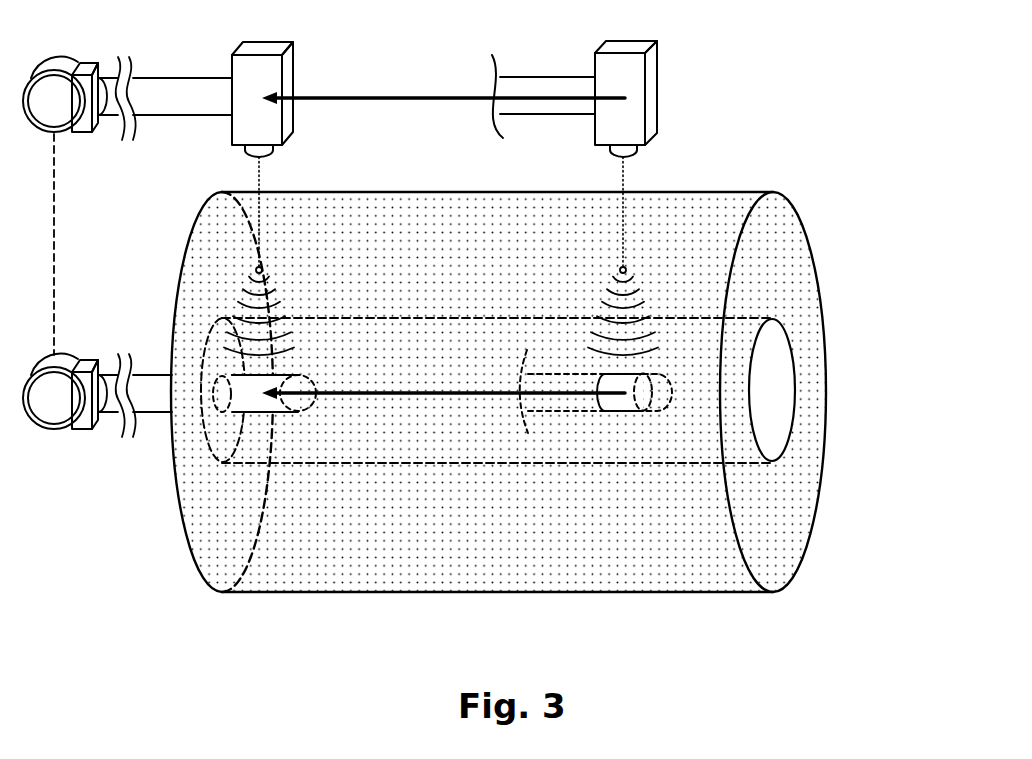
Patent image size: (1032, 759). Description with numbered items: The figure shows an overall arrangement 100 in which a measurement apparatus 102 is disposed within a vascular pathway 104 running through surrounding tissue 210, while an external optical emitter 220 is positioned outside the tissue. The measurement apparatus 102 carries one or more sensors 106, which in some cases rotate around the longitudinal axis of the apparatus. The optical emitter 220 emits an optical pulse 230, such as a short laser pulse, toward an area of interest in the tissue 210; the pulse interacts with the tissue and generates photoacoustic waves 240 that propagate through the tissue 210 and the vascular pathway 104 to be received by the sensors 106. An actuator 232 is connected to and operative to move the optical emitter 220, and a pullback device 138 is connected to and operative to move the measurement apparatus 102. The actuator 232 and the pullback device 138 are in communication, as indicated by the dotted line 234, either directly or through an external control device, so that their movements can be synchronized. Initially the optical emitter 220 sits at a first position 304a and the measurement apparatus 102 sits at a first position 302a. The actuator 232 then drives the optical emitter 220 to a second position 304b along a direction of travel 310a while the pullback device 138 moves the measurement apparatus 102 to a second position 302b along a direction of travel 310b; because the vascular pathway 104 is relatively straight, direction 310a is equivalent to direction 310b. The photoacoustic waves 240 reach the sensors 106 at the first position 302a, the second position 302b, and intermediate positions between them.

The processing system 100 is at (530, 369).
The measurement apparatus 102 is at (176, 430).
The vascular pathway 104 is at (794, 370).
The sensors 106 is at (295, 414).
The pullback device 138 is at (70, 356).
The tissue 210 is at (818, 278).
The optical emitter 220 is at (232, 70).
The optical pulse 230 is at (258, 183).
The actuator 232 is at (66, 63).
The dotted line 234 is at (57, 238).
The photoacoustic waves 240 is at (247, 300).
The first position 302a is at (620, 373).
The second position 302b is at (310, 376).
The first position 304a is at (655, 82).
The second position 304b is at (282, 78).
The direction of travel 310a is at (380, 96).
The direction of travel 310b is at (425, 392).